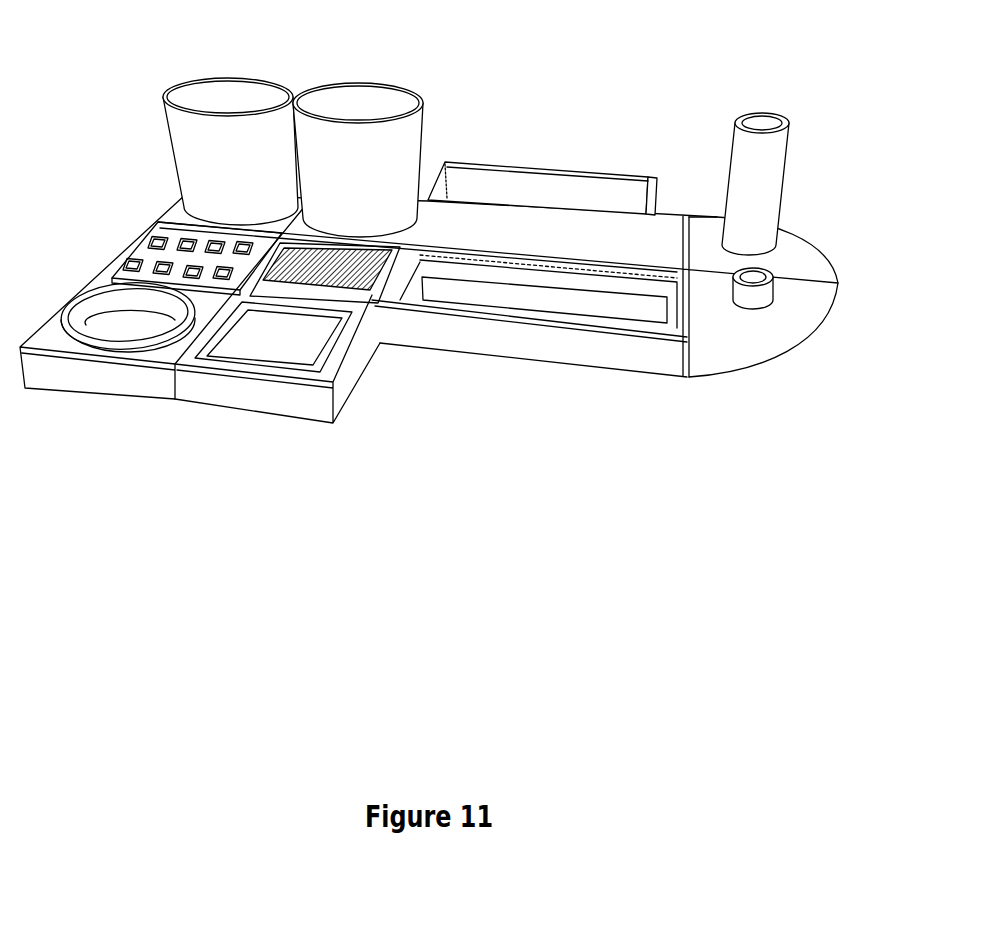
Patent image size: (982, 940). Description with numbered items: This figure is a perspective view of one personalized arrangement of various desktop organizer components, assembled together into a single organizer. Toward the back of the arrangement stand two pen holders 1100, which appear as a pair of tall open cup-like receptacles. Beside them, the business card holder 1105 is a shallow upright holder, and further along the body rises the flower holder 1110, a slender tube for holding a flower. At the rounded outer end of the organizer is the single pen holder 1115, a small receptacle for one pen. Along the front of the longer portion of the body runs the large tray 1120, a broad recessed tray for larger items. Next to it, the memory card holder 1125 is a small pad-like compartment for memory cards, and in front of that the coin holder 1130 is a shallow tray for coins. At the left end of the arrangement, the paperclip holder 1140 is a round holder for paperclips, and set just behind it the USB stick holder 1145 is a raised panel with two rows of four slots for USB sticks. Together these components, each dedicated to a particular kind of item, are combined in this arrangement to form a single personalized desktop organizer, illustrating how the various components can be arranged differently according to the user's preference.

The pen holders 1100 is at (336, 64).
The business card holder 1105 is at (614, 141).
The flower holder 1110 is at (716, 134).
The single pen holder 1115 is at (771, 399).
The large tray 1120 is at (592, 386).
The memory card holder 1125 is at (378, 304).
The coin holder 1130 is at (233, 435).
The paperclip holder 1140 is at (88, 413).
The USB stick holder 1145 is at (127, 218).